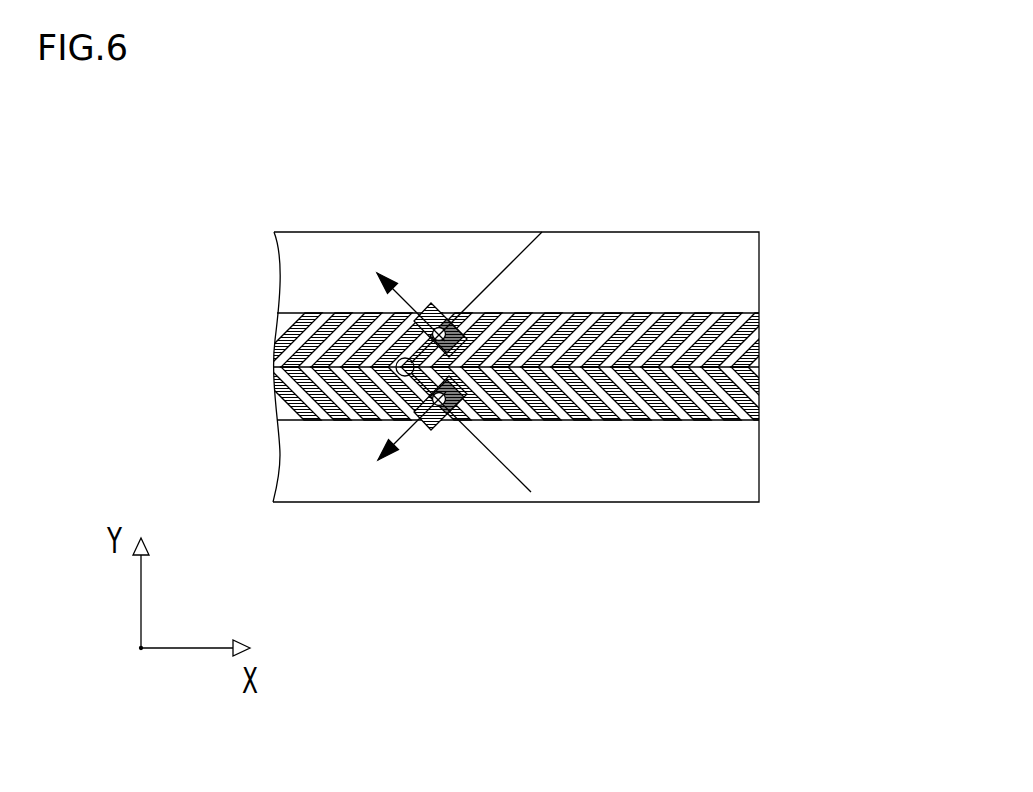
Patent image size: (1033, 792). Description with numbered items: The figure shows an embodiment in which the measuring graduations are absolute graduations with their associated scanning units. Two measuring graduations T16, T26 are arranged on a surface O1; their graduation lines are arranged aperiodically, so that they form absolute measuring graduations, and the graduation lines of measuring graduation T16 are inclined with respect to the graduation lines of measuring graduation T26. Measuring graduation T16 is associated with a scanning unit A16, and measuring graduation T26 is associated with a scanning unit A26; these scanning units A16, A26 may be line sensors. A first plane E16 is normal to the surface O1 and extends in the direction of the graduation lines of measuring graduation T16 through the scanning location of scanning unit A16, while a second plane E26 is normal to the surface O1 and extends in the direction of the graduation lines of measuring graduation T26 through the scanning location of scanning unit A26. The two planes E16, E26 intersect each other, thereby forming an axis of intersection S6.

The surface O1 is at (735, 247).
The measuring graduation T16 is at (737, 332).
The measuring graduation T26 is at (737, 398).
The scanning unit A16 is at (428, 317).
The scanning unit A26 is at (431, 427).
The first plane E16 is at (525, 247).
The second plane E26 is at (520, 482).
The axis of intersection S6 is at (399, 374).